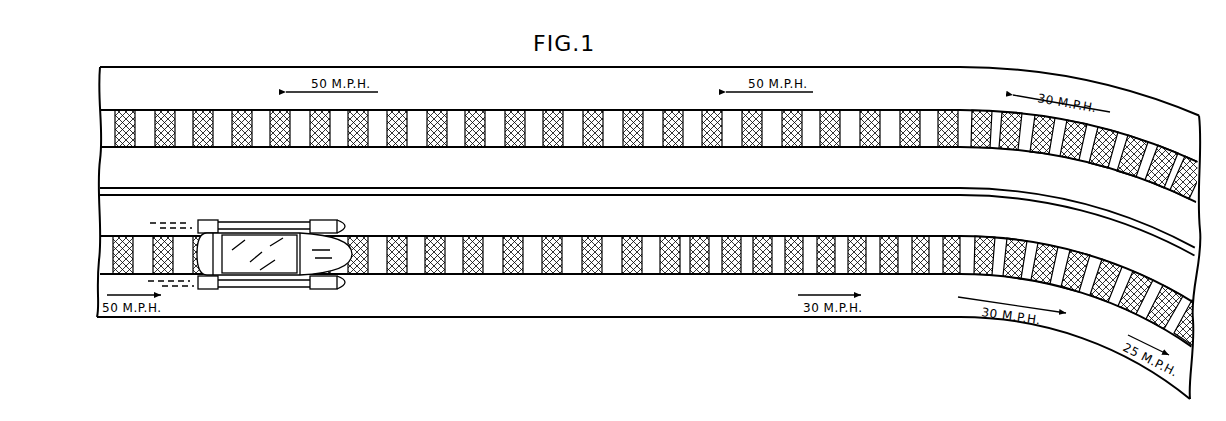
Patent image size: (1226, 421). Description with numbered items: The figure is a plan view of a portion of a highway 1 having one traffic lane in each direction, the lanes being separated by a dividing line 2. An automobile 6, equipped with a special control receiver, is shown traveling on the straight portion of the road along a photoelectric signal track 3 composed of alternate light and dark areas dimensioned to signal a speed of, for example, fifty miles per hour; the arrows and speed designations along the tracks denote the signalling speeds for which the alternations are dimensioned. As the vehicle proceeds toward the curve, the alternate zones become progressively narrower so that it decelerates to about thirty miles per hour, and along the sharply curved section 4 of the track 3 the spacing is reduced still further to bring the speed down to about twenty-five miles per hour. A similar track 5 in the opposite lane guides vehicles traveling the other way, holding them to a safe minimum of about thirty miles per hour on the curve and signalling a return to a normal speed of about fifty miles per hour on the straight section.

The highway 1 is at (608, 307).
The dividing line 2 is at (603, 195).
The photoelectric signal track 3 is at (420, 274).
The sharply curved section 4 is at (1120, 307).
The similar track 5 is at (951, 147).
The automobile 6 is at (332, 238).